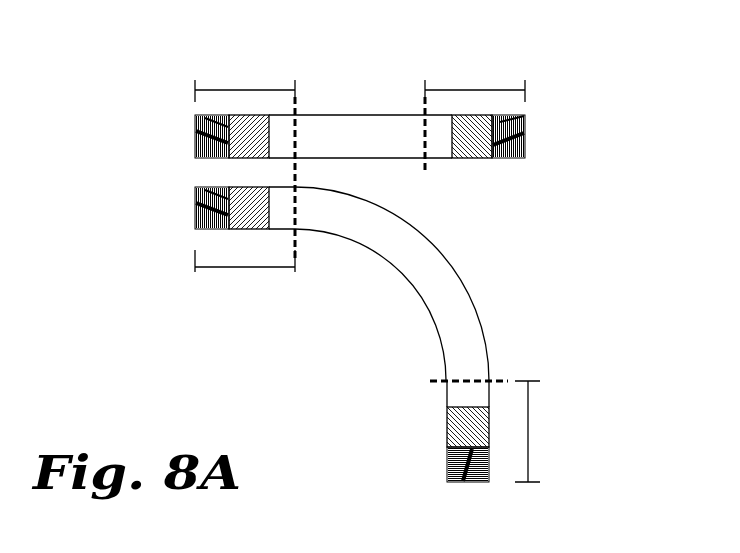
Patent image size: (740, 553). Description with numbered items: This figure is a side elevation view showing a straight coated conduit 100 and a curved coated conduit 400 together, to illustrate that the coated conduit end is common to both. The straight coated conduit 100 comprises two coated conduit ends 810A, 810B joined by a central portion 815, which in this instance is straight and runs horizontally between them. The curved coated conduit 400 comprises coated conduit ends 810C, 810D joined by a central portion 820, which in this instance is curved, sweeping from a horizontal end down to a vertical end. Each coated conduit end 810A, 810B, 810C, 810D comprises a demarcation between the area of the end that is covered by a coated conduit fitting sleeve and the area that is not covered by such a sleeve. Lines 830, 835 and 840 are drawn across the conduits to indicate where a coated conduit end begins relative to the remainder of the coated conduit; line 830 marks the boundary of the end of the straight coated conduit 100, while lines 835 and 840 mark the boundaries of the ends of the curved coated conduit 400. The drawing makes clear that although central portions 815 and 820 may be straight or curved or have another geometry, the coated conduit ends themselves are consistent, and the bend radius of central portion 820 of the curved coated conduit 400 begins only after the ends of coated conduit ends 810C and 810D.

The straight coated conduit 100 is at (170, 138).
The curved coated conduit 400 is at (170, 210).
The central portion 815 is at (362, 115).
The central portion 820 is at (452, 262).
The line 830 is at (428, 170).
The line 835 is at (298, 236).
The line 840 is at (506, 380).
The coated conduit end 810A is at (244, 90).
The coated conduit end 810B is at (476, 90).
The coated conduit end 810C is at (246, 267).
The coated conduit end 810D is at (530, 432).